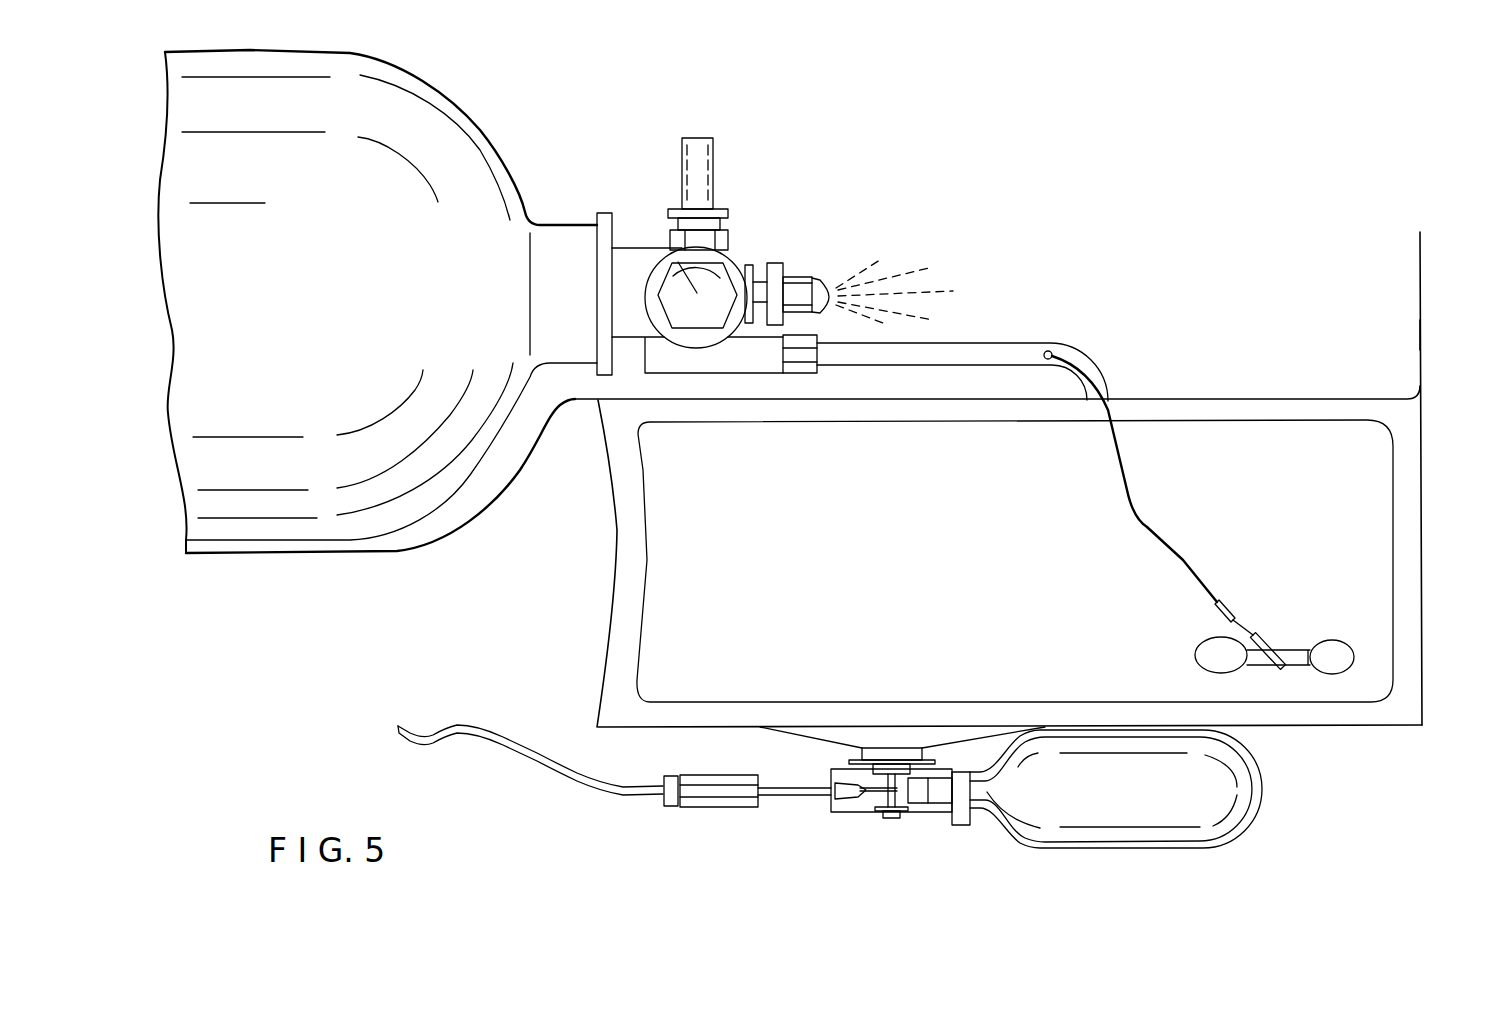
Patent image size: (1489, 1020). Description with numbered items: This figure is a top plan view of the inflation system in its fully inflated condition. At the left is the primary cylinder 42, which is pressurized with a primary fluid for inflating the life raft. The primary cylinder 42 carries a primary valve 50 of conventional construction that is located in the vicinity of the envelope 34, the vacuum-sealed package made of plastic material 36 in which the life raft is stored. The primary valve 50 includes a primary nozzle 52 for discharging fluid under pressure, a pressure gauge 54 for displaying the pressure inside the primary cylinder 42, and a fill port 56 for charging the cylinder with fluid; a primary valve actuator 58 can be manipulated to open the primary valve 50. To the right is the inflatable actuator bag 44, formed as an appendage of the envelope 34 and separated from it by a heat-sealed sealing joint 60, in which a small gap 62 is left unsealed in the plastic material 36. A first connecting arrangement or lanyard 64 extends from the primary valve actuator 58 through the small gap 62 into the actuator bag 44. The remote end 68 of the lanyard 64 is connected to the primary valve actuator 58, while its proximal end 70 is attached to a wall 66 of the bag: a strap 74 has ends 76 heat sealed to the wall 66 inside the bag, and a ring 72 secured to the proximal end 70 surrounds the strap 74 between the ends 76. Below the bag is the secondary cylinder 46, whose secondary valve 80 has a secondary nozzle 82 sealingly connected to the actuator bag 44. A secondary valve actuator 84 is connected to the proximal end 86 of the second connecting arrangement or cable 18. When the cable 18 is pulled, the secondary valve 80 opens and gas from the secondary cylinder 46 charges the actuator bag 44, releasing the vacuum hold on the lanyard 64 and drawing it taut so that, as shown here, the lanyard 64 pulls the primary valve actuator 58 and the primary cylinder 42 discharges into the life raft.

The cable 18 is at (538, 765).
The envelope 34 is at (1420, 334).
The plastic material 36 is at (1390, 263).
The primary cylinder 42 is at (497, 131).
The inflatable actuator bag 44 is at (1338, 718).
The secondary cylinder 46 is at (1155, 823).
The primary valve 50 is at (737, 261).
The primary nozzle 52 is at (797, 287).
The pressure gauge 54 is at (672, 275).
The fill port 56 is at (715, 158).
The primary valve actuator 58 is at (767, 363).
The sealing joint 60 is at (1243, 400).
The small gap 62 is at (1105, 400).
The lanyard 64 is at (1148, 527).
The wall 66 is at (1372, 558).
The remote end 68 is at (1049, 351).
The proximal end 70 is at (1230, 617).
The ring 72 is at (1267, 640).
The strap 74 is at (1300, 667).
The ends 76 is at (1207, 650).
The secondary valve 80 is at (858, 813).
The secondary nozzle 82 is at (902, 748).
The secondary valve actuator 84 is at (897, 788).
The proximal end 86 is at (787, 793).